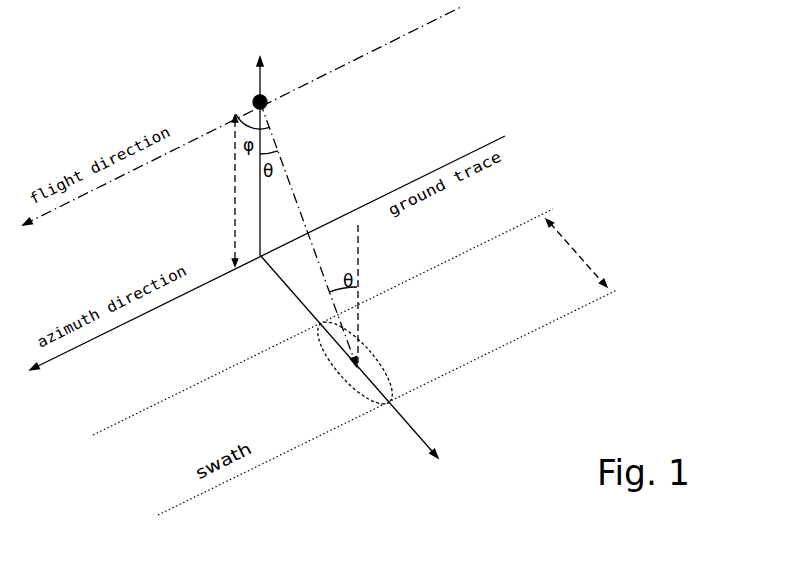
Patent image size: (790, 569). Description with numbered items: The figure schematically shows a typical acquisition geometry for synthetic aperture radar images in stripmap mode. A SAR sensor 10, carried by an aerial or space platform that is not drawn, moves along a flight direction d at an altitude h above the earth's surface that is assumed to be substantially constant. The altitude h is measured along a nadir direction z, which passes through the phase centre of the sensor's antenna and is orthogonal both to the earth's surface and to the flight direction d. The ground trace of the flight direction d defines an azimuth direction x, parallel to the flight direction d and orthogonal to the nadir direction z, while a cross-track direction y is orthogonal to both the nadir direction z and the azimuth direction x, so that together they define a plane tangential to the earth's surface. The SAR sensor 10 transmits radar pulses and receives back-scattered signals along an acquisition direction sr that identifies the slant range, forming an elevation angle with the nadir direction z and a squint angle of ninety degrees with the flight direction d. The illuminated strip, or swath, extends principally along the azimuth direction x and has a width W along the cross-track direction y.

The SAR sensor 10 is at (267, 107).
The altitude h is at (225, 190).
The width W is at (577, 253).
The acquisition direction sr is at (308, 234).
The flight direction d is at (243, 123).
The azimuth direction x is at (267, 263).
The cross-track direction y is at (349, 363).
The nadir direction z is at (250, 153).